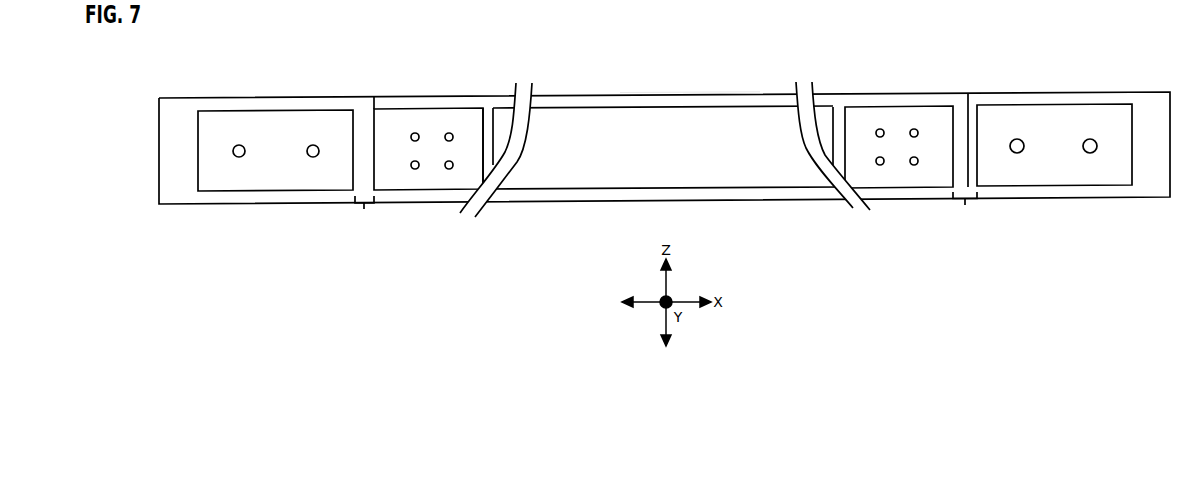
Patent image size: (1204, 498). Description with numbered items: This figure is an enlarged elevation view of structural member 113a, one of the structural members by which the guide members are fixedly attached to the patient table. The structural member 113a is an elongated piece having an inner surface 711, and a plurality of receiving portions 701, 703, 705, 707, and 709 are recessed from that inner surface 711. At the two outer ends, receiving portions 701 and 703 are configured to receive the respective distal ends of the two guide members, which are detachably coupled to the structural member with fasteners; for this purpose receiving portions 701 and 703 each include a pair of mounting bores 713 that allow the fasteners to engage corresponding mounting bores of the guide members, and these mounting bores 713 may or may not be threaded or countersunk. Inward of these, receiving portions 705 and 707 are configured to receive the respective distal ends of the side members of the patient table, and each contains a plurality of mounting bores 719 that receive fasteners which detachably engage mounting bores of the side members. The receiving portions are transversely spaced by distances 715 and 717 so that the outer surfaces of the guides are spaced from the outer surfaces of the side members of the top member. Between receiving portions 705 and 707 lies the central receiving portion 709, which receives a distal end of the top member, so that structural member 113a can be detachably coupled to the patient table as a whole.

The receiving portion 701 is at (268, 126).
The receiving portion 703 is at (1044, 112).
The receiving portion 705 is at (468, 120).
The receiving portion 707 is at (933, 117).
The receiving portion 709 is at (613, 118).
The inner surface 711 is at (672, 101).
The structural member 113a is at (712, 92).
The mounting bores 713 is at (237, 145).
The distance 715 is at (365, 217).
The distance 717 is at (965, 213).
The mounting bores 719 is at (414, 132).